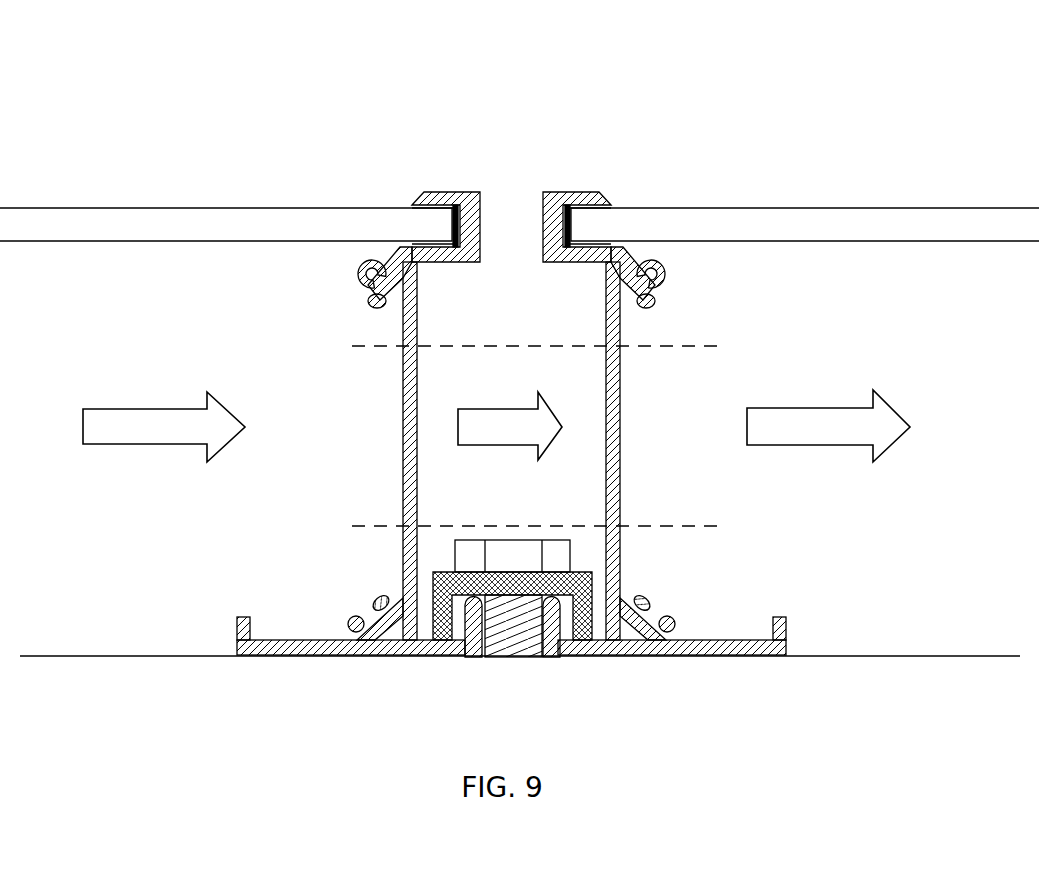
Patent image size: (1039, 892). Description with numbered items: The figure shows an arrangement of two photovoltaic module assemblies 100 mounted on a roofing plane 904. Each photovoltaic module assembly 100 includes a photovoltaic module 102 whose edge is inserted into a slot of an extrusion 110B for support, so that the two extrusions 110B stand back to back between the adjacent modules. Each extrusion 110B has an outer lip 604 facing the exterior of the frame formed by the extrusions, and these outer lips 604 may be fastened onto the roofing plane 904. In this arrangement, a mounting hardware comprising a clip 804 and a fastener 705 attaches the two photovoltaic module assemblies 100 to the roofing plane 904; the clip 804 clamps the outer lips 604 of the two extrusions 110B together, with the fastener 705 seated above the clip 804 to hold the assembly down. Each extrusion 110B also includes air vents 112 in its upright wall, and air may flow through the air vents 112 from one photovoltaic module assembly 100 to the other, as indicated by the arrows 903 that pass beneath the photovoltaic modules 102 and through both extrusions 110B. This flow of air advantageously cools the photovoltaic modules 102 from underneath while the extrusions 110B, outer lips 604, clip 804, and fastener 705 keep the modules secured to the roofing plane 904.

The photovoltaic module assembly 100 is at (122, 104).
The photovoltaic module 102 is at (238, 222).
The extrusion 110B is at (523, 423).
The air vents 112 is at (403, 443).
The arrows 903 is at (155, 408).
The fastener 705 is at (513, 548).
The outer lip 604 is at (445, 655).
The clip 804 is at (487, 583).
The roofing plane 904 is at (118, 655).